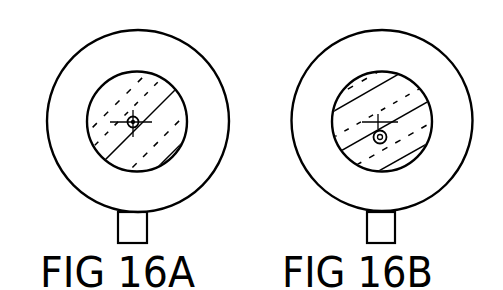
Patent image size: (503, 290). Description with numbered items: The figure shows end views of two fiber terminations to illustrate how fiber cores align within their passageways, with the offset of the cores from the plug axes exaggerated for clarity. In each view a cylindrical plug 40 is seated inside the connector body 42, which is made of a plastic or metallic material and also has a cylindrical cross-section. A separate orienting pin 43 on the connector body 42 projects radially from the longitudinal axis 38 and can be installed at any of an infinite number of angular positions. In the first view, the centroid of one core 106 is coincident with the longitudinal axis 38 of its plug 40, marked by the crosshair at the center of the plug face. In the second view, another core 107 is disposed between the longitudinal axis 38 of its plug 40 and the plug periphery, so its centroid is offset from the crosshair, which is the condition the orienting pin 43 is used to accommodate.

In FIG. 16B, the longitudinal axis 38 is at (378, 121).
In FIG. 16A, the plug 40 is at (182, 100).
In FIG. 16B, the plug 40 is at (412, 82).
In FIG. 16A, the connector body 42 is at (168, 37).
In FIG. 16B, the connector body 42 is at (417, 35).
In FIG. 16A, the orienting pin 43 is at (128, 227).
In FIG. 16B, the orienting pin 43 is at (390, 227).
In FIG. 16A, the core 106 is at (133, 122).
In FIG. 16B, the core 107 is at (374, 140).